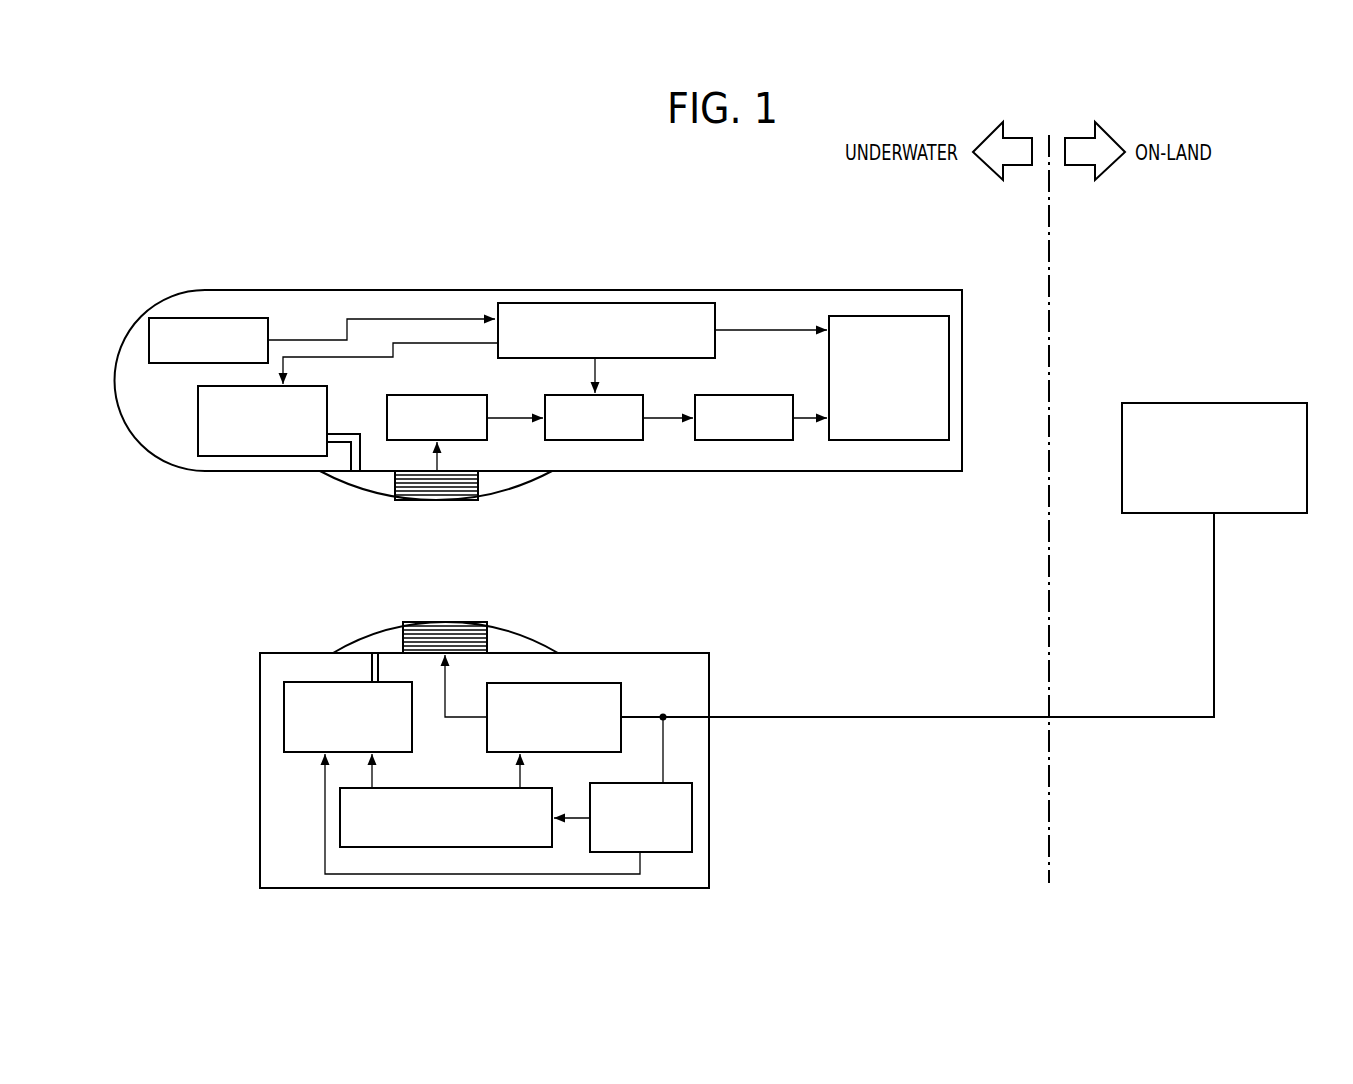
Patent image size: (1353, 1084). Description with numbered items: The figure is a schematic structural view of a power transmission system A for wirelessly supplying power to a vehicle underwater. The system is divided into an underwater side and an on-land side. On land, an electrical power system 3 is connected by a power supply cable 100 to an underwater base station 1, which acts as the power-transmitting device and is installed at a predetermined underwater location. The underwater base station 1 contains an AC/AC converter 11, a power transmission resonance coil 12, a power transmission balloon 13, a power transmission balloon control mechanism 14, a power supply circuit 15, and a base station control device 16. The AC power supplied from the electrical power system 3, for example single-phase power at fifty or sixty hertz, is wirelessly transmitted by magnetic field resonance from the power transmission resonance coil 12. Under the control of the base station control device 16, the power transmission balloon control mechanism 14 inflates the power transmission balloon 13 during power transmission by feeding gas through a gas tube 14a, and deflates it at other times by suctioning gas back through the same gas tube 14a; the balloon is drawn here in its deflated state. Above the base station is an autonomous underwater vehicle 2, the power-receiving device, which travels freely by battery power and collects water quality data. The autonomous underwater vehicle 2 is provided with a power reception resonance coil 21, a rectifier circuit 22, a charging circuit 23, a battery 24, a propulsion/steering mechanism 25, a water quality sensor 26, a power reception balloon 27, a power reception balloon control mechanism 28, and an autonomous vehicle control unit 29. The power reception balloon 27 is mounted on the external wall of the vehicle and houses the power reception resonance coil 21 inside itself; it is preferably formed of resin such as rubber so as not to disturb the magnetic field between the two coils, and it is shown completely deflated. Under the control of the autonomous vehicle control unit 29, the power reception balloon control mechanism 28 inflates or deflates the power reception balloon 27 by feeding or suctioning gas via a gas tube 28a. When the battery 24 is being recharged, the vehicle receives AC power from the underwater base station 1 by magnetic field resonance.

The power transmission system A is at (122, 228).
The underwater base station 1 is at (258, 808).
The AC/AC converter 11 is at (603, 683).
The power transmission resonance coil 12 is at (488, 640).
The power transmission balloon 13 is at (383, 631).
The power transmission balloon control mechanism 14 is at (284, 720).
The gas tube 14a is at (365, 668).
The power supply circuit 15 is at (692, 815).
The base station control device 16 is at (455, 788).
The autonomous underwater vehicle 2 is at (445, 290).
The power reception resonance coil 21 is at (480, 480).
The rectifier circuit 22 is at (443, 395).
The charging circuit 23 is at (613, 395).
The battery 24 is at (745, 395).
The propulsion/steering mechanism 25 is at (908, 316).
The water quality sensor 26 is at (242, 318).
The power reception balloon 27 is at (362, 484).
The power reception balloon control mechanism 28 is at (198, 420).
The gas tube 28a is at (347, 452).
The autonomous vehicle control unit 29 is at (715, 318).
The electrical power system 3 is at (1270, 403).
The power supply cable 100 is at (1214, 640).